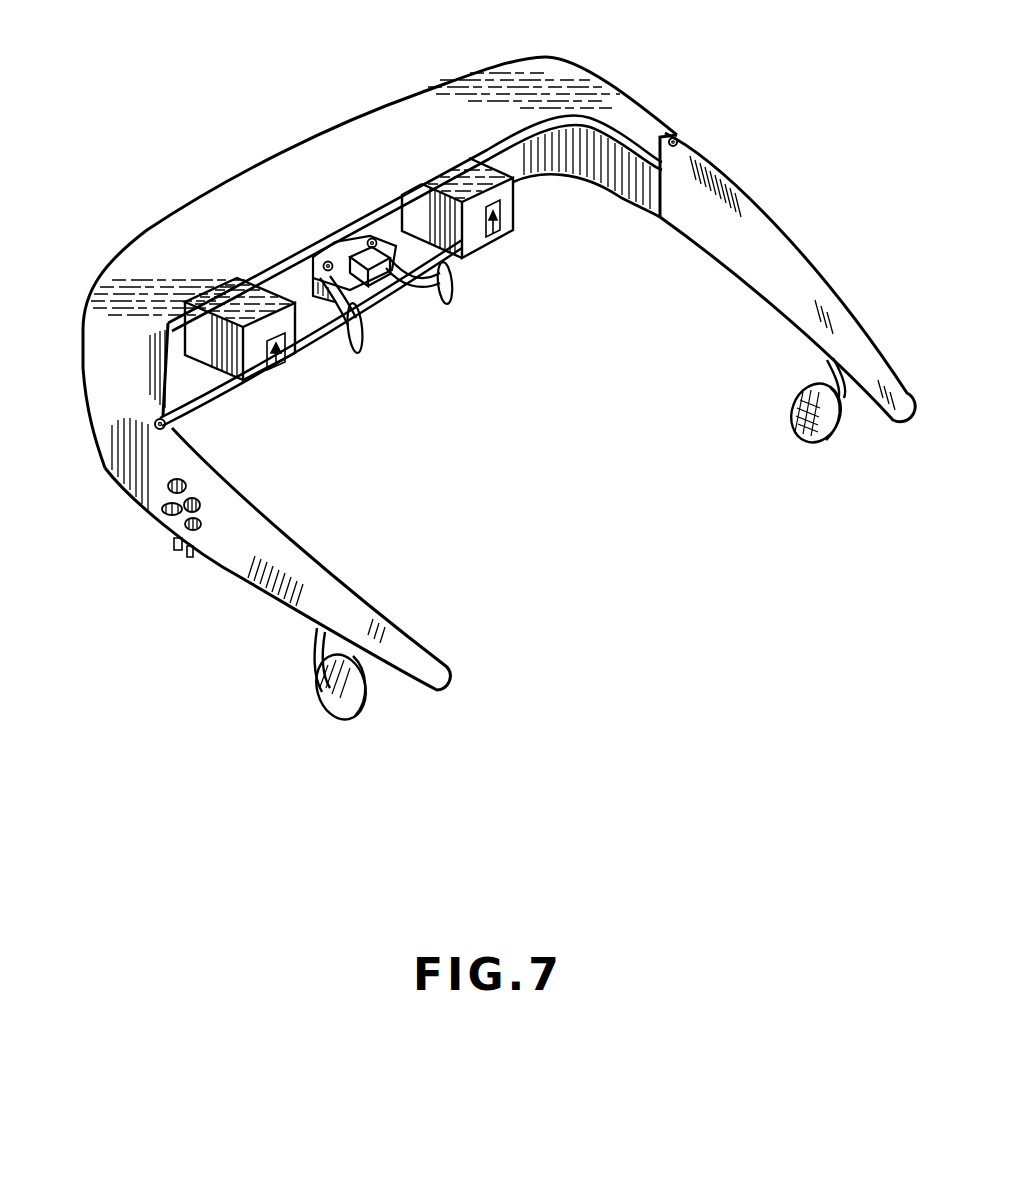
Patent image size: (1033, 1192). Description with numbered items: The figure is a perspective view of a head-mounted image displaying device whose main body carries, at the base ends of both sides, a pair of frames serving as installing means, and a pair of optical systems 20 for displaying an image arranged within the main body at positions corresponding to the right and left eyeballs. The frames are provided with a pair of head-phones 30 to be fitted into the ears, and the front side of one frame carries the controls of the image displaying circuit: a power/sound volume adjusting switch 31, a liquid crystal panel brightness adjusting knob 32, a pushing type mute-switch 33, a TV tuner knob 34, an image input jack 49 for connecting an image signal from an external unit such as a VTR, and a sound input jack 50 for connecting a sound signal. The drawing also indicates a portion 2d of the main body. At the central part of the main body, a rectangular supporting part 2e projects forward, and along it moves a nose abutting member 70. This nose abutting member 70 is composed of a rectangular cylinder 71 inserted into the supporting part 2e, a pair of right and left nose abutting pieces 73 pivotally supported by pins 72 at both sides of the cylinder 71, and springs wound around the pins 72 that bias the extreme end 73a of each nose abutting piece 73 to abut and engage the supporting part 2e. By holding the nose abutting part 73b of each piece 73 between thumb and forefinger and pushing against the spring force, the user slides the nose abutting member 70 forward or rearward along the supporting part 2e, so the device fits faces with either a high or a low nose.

The upper band portion of frame 2d is at (515, 203).
The supporting part 2e is at (388, 297).
The optical systems 20 is at (268, 350).
The head-phones 30 is at (366, 690).
The power/sound volume adjusting switch 31 is at (168, 487).
The liquid crystal panel brightness adjusting knob 32 is at (199, 500).
The mute-switch 33 is at (163, 513).
The TV tuner knob 34 is at (200, 550).
The image input jack 49 is at (173, 545).
The sound input jack 50 is at (186, 558).
The nose abutting member 70 is at (383, 347).
The rectangular cylinder 71 is at (367, 232).
The pins 72 is at (330, 262).
The nose abutting pieces 73 is at (330, 312).
The extreme end of nose abutting piece 73a is at (318, 253).
The nose abutting part 73b is at (356, 353).